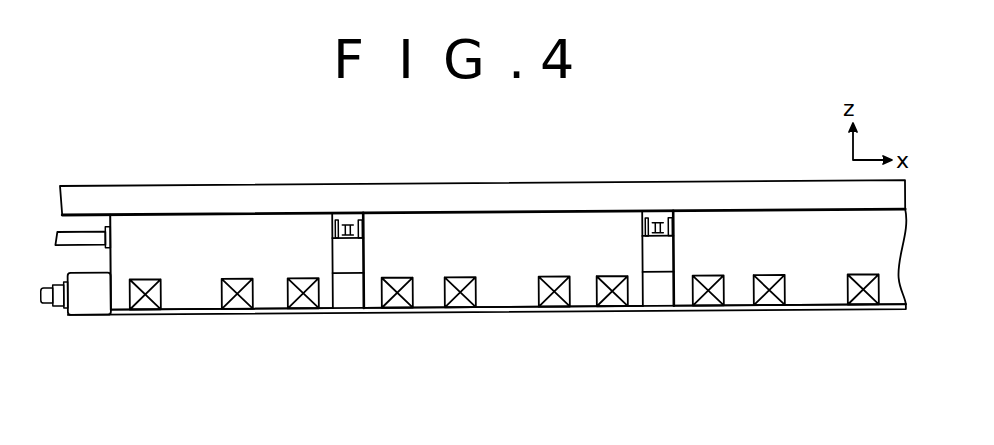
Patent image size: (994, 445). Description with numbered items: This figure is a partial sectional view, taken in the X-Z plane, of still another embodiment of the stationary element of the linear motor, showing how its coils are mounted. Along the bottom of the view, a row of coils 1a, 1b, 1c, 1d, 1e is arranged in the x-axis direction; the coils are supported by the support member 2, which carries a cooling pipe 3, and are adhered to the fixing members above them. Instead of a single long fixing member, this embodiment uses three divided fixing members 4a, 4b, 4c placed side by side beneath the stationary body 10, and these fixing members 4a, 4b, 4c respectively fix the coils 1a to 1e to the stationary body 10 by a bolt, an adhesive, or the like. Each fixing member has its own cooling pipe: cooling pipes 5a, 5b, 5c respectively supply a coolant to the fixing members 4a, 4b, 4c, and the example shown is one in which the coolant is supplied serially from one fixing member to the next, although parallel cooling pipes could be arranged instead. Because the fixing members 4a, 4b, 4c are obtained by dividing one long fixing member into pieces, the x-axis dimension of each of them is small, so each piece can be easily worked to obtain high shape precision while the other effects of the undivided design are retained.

The stationary body 10 is at (423, 204).
The support member 2 is at (90, 297).
The cooling pipe 3 is at (53, 304).
The fixing member 4a is at (202, 227).
The fixing member 4b is at (503, 253).
The fixing member 4c is at (765, 237).
The cooling pipe 5a is at (82, 237).
The cooling pipe 5b is at (344, 228).
The cooling pipe 5c is at (659, 230).
The coil 1a is at (145, 311).
The coil 1b is at (302, 310).
The coil 1c is at (459, 309).
The coil 1d is at (611, 308).
The coil 1e is at (768, 306).